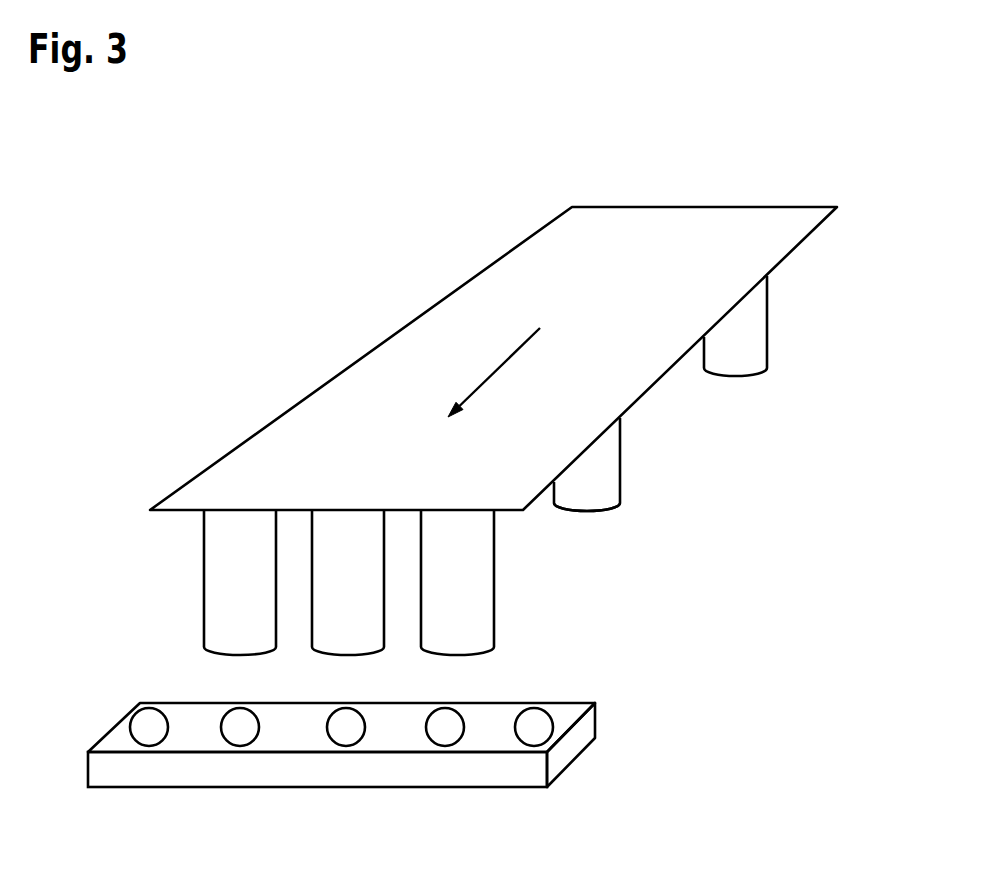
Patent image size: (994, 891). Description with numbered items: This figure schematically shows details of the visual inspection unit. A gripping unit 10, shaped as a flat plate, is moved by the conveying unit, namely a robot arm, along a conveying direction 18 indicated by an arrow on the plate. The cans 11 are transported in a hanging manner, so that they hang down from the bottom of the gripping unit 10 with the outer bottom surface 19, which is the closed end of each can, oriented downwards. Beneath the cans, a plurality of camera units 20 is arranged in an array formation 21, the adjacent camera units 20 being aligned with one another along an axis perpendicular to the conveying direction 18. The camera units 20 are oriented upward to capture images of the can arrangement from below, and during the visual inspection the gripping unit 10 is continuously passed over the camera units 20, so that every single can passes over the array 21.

The gripping unit 10 is at (748, 235).
The cans 11 is at (232, 593).
The conveying direction 18 is at (503, 358).
The outer bottom surface 19 is at (590, 523).
The camera units 20 is at (141, 746).
The array formation 21 is at (588, 722).